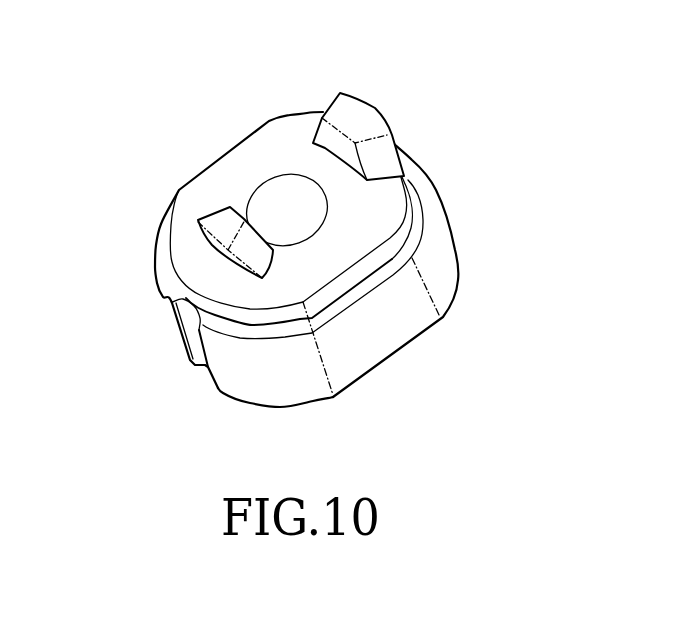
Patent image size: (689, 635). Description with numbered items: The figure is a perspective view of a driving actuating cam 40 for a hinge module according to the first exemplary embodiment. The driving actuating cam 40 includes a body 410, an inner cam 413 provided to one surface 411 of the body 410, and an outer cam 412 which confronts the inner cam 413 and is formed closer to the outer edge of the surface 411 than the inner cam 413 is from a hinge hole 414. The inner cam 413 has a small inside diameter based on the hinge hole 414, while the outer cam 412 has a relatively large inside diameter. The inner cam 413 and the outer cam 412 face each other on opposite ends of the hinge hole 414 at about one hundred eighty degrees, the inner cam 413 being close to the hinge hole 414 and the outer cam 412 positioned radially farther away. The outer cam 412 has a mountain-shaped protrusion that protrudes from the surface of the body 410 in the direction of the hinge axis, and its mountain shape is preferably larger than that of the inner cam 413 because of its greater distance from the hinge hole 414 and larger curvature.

The driving actuating cam 40 is at (315, 236).
The body 410 is at (373, 332).
The one surface 411 is at (377, 213).
The outer cam 412 is at (366, 123).
The inner cam 413 is at (213, 226).
The hinge hole 414 is at (272, 206).